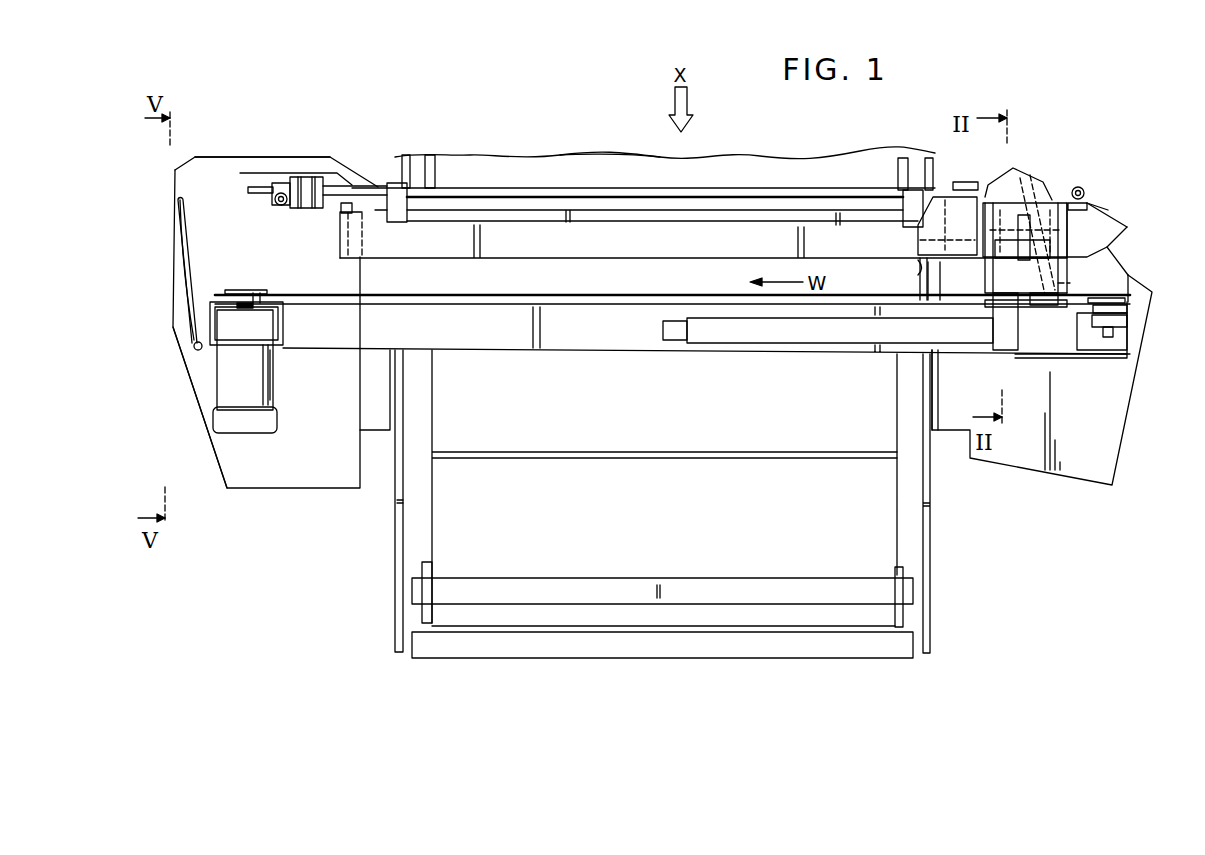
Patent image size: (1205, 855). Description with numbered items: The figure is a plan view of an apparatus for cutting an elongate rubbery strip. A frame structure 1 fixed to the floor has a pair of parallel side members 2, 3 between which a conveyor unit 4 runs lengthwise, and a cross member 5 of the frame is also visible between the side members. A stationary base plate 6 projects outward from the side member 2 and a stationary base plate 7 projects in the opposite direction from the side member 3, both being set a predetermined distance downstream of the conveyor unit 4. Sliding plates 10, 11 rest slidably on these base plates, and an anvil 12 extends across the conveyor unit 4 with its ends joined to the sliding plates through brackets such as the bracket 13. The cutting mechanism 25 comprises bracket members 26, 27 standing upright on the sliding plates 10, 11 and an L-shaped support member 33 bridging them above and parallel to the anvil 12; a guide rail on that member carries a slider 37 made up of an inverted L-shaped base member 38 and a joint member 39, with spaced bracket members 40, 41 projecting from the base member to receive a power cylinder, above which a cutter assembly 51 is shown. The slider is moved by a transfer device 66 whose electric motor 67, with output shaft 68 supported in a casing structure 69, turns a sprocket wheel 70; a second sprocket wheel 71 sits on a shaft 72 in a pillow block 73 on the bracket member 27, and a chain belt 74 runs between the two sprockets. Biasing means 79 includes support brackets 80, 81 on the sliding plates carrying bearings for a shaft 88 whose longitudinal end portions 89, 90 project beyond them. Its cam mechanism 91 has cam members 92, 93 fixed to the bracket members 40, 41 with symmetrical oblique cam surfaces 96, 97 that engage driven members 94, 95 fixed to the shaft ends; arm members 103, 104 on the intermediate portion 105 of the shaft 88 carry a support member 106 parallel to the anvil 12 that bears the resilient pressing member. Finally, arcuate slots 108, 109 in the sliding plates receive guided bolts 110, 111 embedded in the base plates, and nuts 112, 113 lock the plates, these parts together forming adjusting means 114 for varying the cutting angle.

The frame structure 1 is at (933, 651).
The side member 2 is at (393, 648).
The side member 3 is at (931, 628).
The conveyor unit 4 is at (803, 659).
The upper cross beam 5 is at (708, 633).
The stationary base plate 6 is at (318, 488).
The stationary base plate 7 is at (1042, 392).
The sliding plate 10 is at (241, 168).
The sliding plate 11 is at (1133, 277).
The anvil 12 is at (542, 260).
The bracket 13 is at (339, 208).
The cutting mechanism 25 is at (830, 355).
The bracket member 26 is at (218, 298).
The bracket member 27 is at (1097, 349).
The L-shaped support member 33 is at (517, 349).
The slider 37 is at (990, 365).
The inverted L-shaped base member 38 is at (1010, 348).
The joint member 39 is at (988, 302).
The bracket member 40 is at (940, 268).
The bracket member 41 is at (1069, 258).
The carriage 51 is at (1045, 197).
The transfer device 66 is at (265, 289).
The electric motor 67 is at (240, 435).
The output shaft 68 is at (245, 308).
The casing structure 69 is at (275, 398).
The sprocket wheel 70 is at (247, 290).
The sprocket wheel 71 is at (1112, 297).
The shaft 72 is at (1113, 338).
The pillow block 73 is at (1122, 322).
The chain belt 74 is at (282, 292).
The biasing means 79 is at (572, 154).
The support bracket 80 is at (338, 172).
The support bracket 81 is at (1002, 183).
The shaft 88 is at (538, 188).
The longitudinal end portion 89 is at (379, 188).
The longitudinal end portion 90 is at (1089, 198).
The cam mechanism 91 is at (918, 268).
The cam member 92 is at (916, 245).
The cam member 93 is at (1128, 227).
The driven member 94 is at (277, 204).
The driven member 95 is at (1079, 186).
The cam surface 96 is at (930, 200).
The cam surface 97 is at (1110, 208).
The arm member 103 is at (393, 224).
The arm member 104 is at (905, 190).
The intermediate portion 105 is at (634, 188).
The support member 106 is at (660, 225).
The arcuate slot 108 is at (189, 208).
The arcuate slot 109 is at (1020, 182).
The guided bolt 110 is at (196, 352).
The guided bolt 111 is at (1063, 288).
The nut 112 is at (193, 348).
The nut 113 is at (1042, 298).
The adjusting means 114 is at (183, 384).